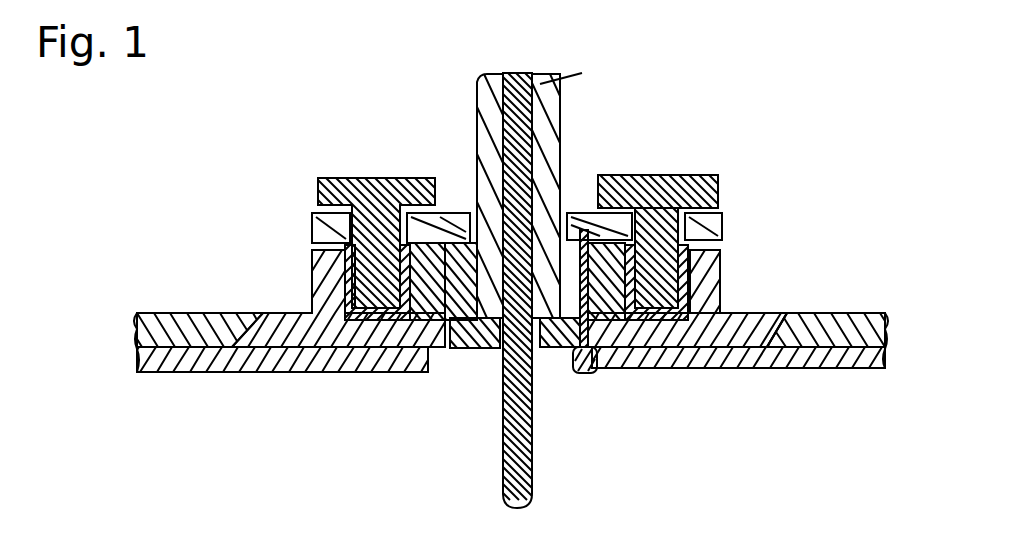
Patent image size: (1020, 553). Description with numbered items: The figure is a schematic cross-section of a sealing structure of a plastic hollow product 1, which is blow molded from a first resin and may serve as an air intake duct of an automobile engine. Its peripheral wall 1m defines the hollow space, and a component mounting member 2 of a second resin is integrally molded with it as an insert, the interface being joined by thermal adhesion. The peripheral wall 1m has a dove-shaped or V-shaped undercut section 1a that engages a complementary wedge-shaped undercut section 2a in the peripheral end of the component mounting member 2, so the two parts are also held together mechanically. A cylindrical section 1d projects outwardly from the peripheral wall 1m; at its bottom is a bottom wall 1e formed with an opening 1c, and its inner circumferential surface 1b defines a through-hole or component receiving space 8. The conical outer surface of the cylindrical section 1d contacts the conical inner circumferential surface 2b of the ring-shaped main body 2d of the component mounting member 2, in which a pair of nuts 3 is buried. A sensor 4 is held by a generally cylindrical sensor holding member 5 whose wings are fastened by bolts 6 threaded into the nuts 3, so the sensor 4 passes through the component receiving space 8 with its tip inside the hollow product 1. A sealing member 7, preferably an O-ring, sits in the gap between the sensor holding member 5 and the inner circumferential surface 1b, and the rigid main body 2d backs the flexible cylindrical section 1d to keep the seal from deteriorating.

The plastic hollow product 1 is at (825, 368).
The undercut section 1a is at (785, 313).
The inner circumferential surface 1b is at (478, 220).
The opening 1c is at (497, 380).
The cylindrical section 1d is at (457, 213).
The bottom wall 1e is at (493, 347).
The peripheral wall 1m is at (867, 365).
The component mounting member 2 is at (730, 375).
The undercut section 2a is at (772, 370).
The inner circumferential surface 2b is at (573, 357).
The main body 2d is at (400, 178).
The nut 3 is at (722, 272).
The sensor 4 is at (532, 437).
The sensor holding member 5 is at (545, 83).
The bolt 6 is at (682, 175).
The sealing member 7 is at (478, 345).
The component receiving space 8 is at (443, 347).